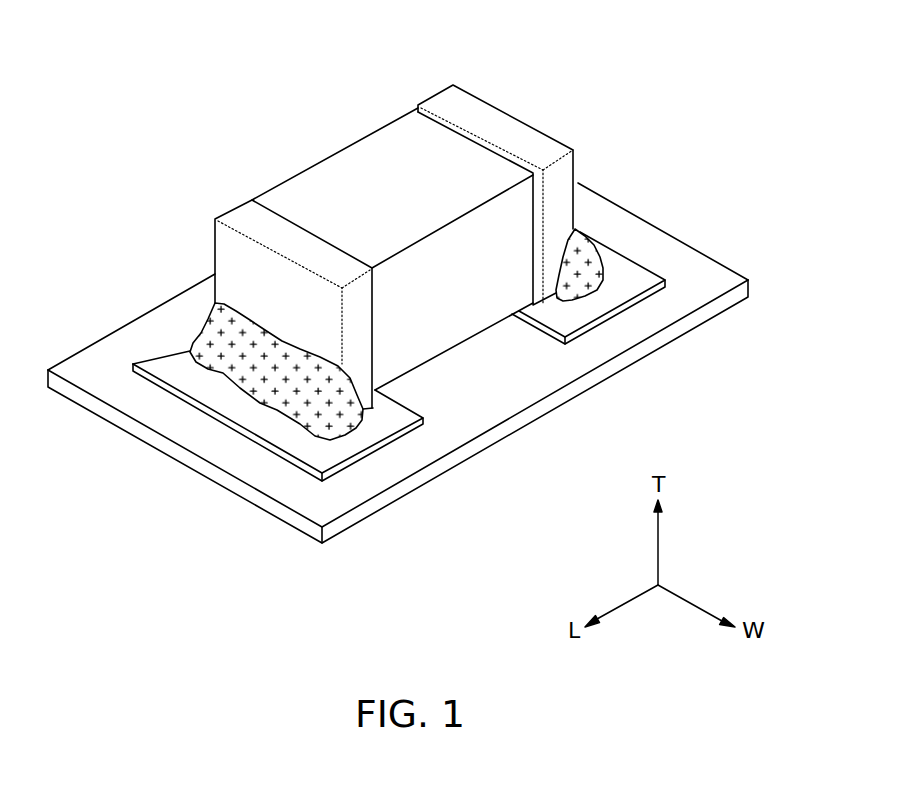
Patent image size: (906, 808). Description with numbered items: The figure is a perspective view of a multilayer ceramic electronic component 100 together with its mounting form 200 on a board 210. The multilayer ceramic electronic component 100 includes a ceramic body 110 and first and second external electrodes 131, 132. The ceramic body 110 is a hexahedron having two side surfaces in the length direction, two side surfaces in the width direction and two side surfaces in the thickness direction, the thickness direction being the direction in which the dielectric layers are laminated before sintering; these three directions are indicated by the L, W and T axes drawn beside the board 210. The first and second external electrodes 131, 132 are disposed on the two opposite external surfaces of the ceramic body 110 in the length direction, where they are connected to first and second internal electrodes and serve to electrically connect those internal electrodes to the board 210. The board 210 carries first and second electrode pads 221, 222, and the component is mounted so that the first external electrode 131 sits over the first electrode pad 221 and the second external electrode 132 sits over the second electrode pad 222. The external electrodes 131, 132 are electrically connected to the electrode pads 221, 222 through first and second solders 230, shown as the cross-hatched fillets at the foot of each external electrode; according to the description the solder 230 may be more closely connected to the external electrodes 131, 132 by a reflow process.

The mounting form 200 is at (172, 53).
The multilayer ceramic electronic component 100 is at (373, 135).
The ceramic body 110 is at (350, 173).
The first external electrode 131 is at (247, 220).
The second external electrode 132 is at (448, 105).
The board 210 is at (510, 380).
The first electrode pad 221 is at (372, 428).
The second electrode pad 222 is at (612, 290).
The solder 230 is at (260, 365).